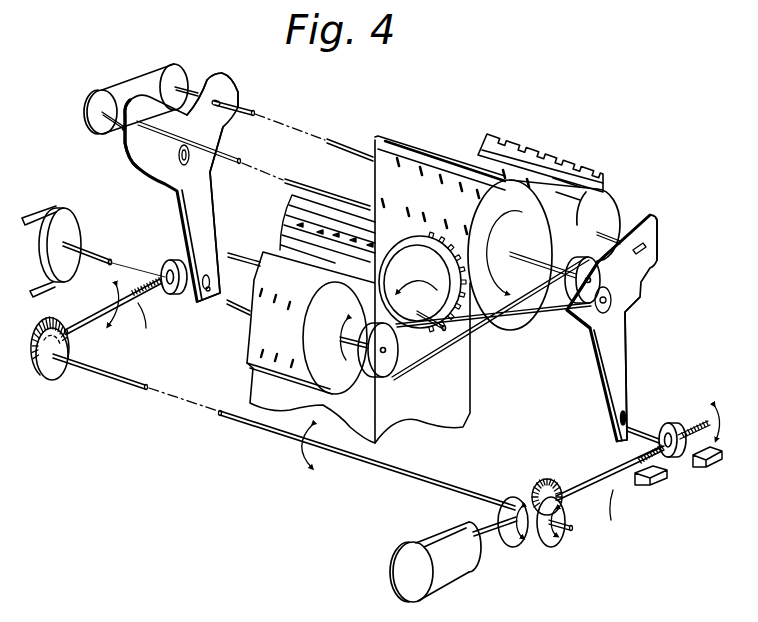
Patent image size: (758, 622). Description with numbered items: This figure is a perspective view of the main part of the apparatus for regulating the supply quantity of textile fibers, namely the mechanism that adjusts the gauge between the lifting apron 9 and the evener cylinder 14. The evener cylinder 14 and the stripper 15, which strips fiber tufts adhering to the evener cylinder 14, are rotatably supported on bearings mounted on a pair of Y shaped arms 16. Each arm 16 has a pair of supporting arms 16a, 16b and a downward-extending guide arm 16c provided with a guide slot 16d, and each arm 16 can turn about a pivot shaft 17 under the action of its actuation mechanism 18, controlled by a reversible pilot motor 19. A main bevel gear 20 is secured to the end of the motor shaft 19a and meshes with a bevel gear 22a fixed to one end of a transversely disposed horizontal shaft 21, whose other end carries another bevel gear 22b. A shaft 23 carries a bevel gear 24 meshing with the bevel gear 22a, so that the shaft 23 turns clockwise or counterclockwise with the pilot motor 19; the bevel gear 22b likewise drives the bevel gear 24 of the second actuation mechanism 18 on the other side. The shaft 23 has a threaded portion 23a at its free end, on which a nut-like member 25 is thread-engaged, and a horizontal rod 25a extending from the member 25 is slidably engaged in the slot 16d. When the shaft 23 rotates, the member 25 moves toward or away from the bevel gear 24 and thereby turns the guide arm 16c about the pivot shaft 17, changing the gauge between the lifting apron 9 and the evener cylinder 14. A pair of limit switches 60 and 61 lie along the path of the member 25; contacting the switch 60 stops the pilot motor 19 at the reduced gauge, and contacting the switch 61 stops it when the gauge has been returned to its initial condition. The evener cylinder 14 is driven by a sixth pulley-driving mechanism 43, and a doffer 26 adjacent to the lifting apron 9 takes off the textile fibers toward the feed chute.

The lifting apron 9 is at (462, 375).
The evener cylinder 14 is at (417, 150).
The stripper 15 is at (606, 197).
The Y shaped arm 16 is at (182, 187).
The supporting arm 16a is at (573, 320).
The supporting arm 16b is at (232, 90).
The guide arm 16c is at (212, 214).
The guide slot 16d is at (207, 292).
The pivot shaft 17 is at (200, 163).
The actuation mechanism 18 is at (158, 354).
The pilot motor 19 is at (400, 575).
The motor shaft 19a is at (480, 545).
The main bevel gear 20 is at (512, 495).
The horizontal shaft 21 is at (250, 422).
The bevel gear 22a is at (553, 548).
The bevel gear 22b is at (52, 380).
The shaft 23 is at (84, 322).
The threaded portion 23a is at (632, 452).
The bevel gear 24 is at (80, 370).
The nut-like member 25 is at (166, 262).
The horizontal rod 25a is at (662, 427).
The doffer 26 is at (267, 336).
The sixth pulley-driving mechanism 43 is at (147, 66).
The limit switch 60 is at (705, 468).
The limit switch 61 is at (640, 487).